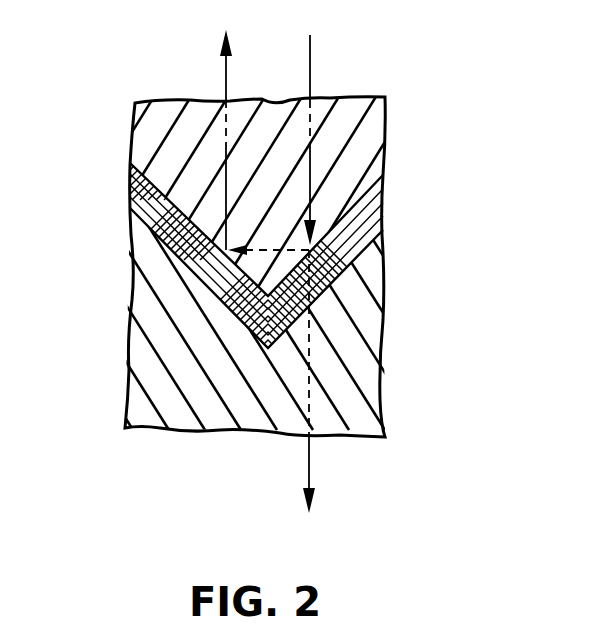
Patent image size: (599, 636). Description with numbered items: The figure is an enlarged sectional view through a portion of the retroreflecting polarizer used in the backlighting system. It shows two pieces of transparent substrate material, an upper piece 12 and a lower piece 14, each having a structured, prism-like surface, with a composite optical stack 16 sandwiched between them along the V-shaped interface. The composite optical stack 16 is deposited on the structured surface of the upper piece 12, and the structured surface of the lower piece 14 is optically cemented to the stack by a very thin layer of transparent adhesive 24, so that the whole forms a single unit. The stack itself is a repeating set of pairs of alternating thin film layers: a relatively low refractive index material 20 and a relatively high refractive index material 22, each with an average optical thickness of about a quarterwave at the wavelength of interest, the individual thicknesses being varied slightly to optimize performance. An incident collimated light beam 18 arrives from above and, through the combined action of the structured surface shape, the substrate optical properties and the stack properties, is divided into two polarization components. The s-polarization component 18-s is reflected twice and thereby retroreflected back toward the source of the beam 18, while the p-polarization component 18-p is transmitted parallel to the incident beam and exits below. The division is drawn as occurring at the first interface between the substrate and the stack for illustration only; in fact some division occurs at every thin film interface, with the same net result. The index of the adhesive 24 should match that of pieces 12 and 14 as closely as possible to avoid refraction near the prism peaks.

The upper piece of transparent substrate material 12 is at (372, 122).
The lower piece of transparent substrate material 14 is at (367, 368).
The composite optical stack 16 is at (244, 230).
The incident collimated light beam 18 is at (312, 52).
The s-polarization component 18-s is at (223, 82).
The p-polarization component 18-p is at (312, 468).
The low refractive index material 20 is at (386, 192).
The high refractive index material 22 is at (386, 209).
The adhesive 24 is at (362, 242).